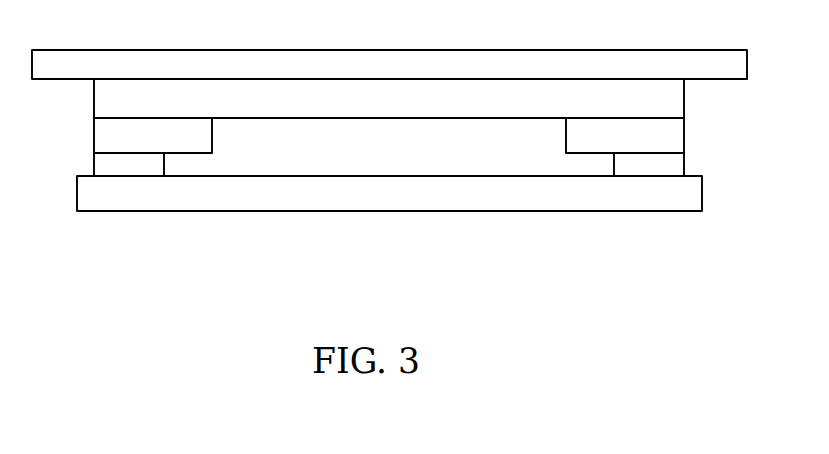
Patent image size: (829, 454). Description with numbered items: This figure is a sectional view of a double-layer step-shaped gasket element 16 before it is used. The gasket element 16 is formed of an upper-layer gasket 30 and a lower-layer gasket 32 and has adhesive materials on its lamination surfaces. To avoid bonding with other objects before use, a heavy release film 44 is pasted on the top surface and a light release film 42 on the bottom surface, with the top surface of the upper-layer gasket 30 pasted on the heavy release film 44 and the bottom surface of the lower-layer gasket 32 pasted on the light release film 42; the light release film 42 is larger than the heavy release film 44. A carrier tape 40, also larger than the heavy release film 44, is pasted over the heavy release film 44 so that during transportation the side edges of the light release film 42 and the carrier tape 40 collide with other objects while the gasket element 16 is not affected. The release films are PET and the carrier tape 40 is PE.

The gasket element 16 is at (190, 156).
The upper-layer gasket 30 is at (102, 128).
The lower-layer gasket 32 is at (103, 166).
The carrier tape 40 is at (310, 57).
The light release film 42 is at (363, 197).
The heavy release film 44 is at (483, 91).